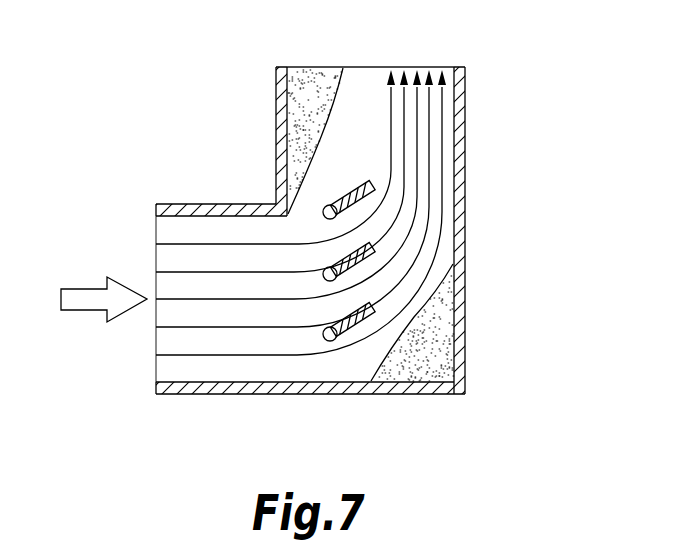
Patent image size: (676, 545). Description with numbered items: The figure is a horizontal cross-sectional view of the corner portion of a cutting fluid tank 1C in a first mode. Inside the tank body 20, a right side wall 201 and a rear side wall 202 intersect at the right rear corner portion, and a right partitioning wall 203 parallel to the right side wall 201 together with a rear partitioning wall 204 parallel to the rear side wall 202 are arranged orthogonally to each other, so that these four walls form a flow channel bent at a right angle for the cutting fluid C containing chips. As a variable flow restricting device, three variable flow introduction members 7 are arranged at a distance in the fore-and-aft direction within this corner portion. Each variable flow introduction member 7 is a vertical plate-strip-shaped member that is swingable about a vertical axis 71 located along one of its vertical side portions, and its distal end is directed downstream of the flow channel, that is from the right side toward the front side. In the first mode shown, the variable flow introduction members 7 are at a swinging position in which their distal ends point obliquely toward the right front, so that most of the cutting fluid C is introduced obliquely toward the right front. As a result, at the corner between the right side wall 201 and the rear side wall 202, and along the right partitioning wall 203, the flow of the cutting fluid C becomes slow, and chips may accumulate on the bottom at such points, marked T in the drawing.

The cutting fluid tank 1C is at (508, 225).
The tank body 20 is at (343, 265).
The right side wall 201 is at (467, 129).
The rear side wall 202 is at (402, 394).
The right partitioning wall 203 is at (278, 101).
The rear partitioning wall 204 is at (180, 202).
The variable flow introduction member 7 is at (371, 181).
The vertical axis 71 is at (327, 204).
The stagnation (turbulent) region T is at (300, 72).
The cutting fluid C is at (392, 96).